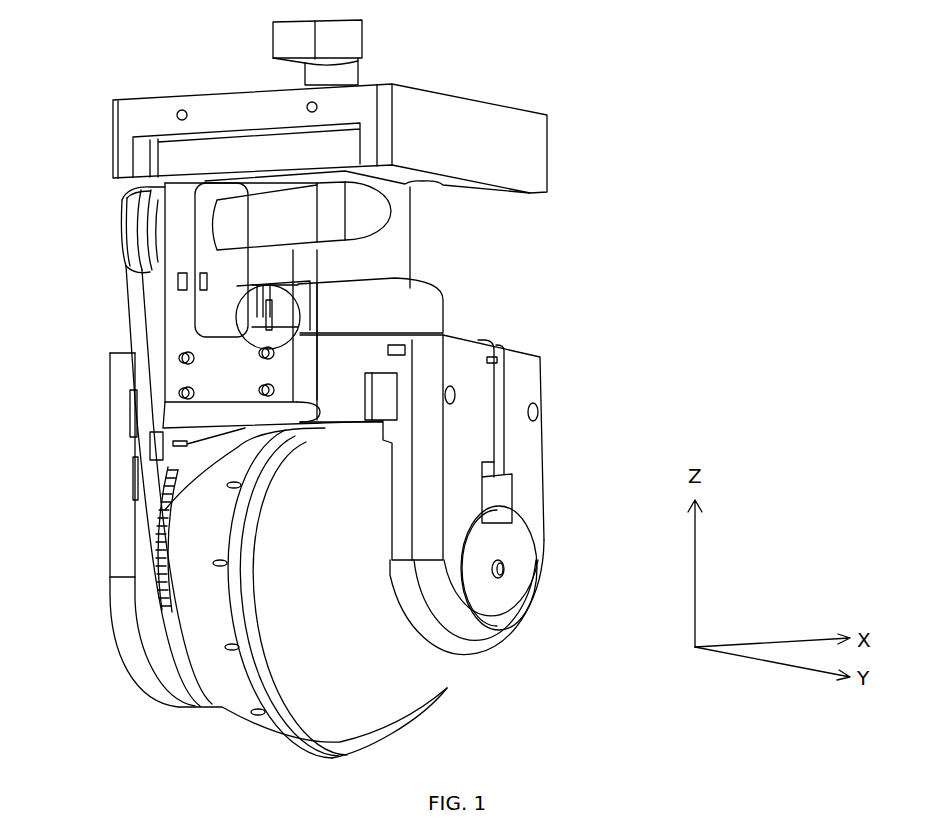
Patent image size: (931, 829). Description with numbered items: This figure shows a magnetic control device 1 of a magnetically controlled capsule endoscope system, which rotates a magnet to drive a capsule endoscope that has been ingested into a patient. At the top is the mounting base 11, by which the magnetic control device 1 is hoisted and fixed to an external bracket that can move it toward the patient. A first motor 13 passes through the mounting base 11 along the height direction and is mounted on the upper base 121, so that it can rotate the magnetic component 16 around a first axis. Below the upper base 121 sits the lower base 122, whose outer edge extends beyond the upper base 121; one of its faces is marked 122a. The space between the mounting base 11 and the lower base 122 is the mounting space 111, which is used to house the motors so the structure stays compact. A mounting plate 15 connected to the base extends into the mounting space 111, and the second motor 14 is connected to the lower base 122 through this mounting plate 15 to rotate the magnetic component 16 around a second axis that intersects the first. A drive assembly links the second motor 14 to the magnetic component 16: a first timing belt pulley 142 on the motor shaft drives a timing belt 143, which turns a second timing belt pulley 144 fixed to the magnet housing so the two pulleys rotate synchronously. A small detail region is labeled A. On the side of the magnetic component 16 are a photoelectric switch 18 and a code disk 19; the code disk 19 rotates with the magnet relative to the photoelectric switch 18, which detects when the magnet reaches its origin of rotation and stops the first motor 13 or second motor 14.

The magnetic control device 1 is at (507, 62).
The mounting base 11 is at (543, 137).
The mounting space 111 is at (383, 261).
The first motor 13 is at (350, 29).
The second motor 14 is at (375, 230).
The mounting plate 15 is at (183, 345).
The detail region A is at (252, 322).
The upper base 121 is at (443, 312).
The lower base 122 is at (456, 435).
The yoke arm side face 122a is at (537, 392).
The first timing belt pulley 142 is at (125, 200).
The timing belt 143 is at (138, 287).
The second timing belt pulley 144 is at (160, 517).
The magnetic component 16 is at (387, 708).
The photoelectric switch 18 is at (513, 503).
The code disk 19 is at (526, 570).